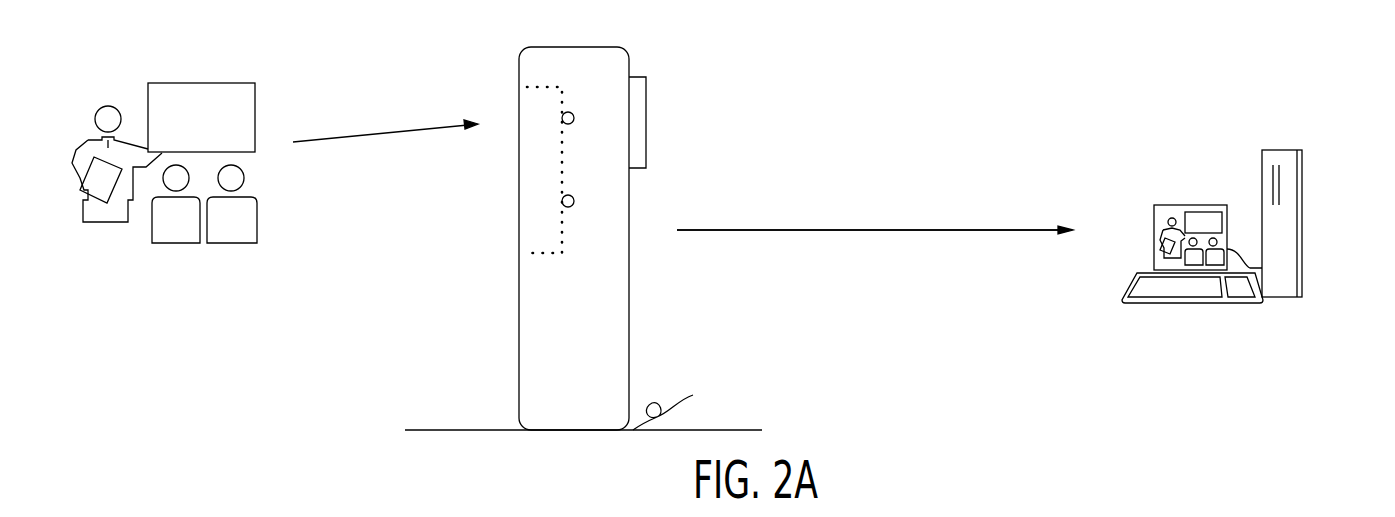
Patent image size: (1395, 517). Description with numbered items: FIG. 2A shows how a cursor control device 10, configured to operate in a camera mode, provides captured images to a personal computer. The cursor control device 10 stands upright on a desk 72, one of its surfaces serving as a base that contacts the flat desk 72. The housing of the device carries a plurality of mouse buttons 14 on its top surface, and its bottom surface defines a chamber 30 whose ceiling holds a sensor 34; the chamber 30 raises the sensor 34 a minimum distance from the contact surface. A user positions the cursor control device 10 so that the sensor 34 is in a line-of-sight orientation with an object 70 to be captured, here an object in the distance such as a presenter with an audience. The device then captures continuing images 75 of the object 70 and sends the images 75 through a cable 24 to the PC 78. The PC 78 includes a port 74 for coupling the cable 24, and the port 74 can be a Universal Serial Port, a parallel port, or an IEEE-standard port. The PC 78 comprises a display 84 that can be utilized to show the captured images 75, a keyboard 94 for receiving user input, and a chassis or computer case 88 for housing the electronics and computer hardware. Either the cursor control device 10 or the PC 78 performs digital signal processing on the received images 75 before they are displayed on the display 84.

The object 70 is at (275, 203).
The cursor control device 10 is at (520, 50).
The mouse buttons 14 is at (646, 136).
The sensor 34 is at (586, 110).
The chamber 30 is at (552, 253).
The cable 24 is at (662, 395).
The desk 72 is at (632, 432).
The captured images 75 is at (875, 212).
The port 74 is at (868, 280).
The display 84 is at (1172, 203).
The computer case 88 is at (1302, 218).
The PC 78 is at (1257, 310).
The keyboard 94 is at (1128, 307).